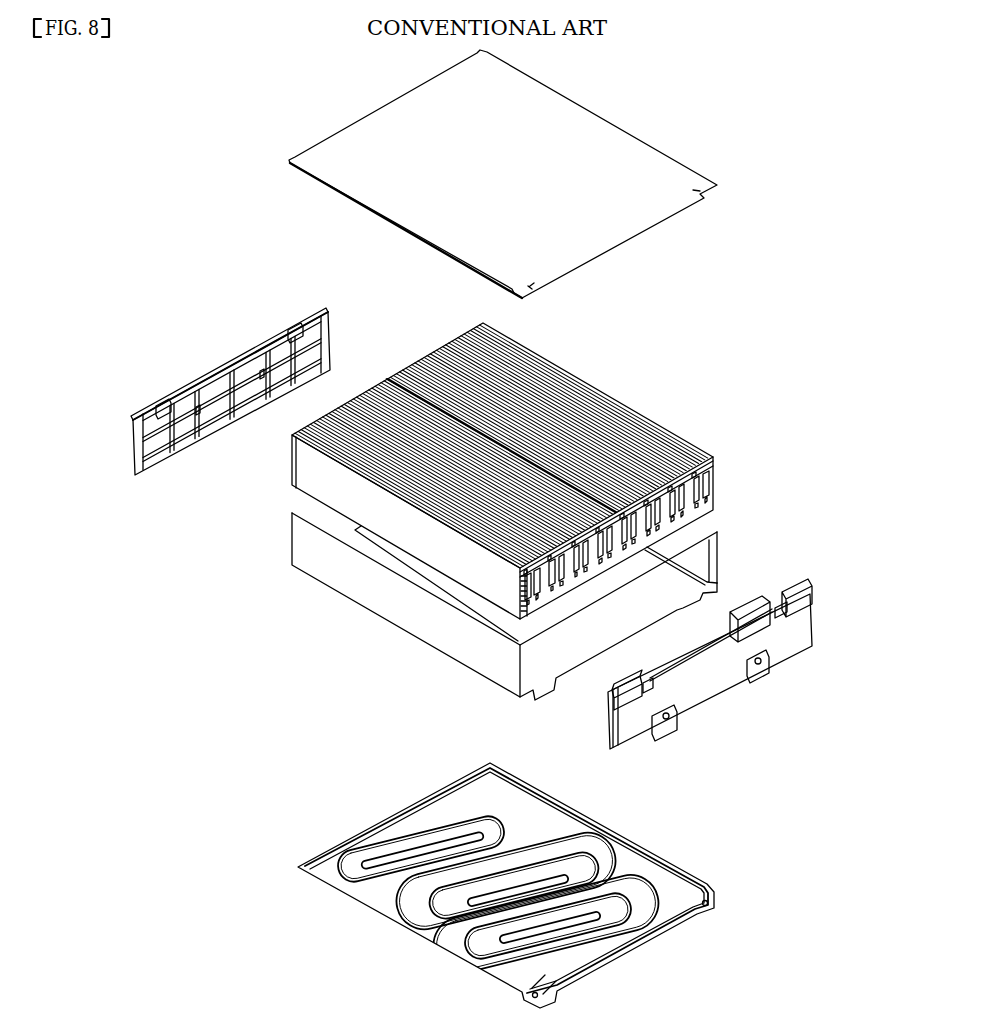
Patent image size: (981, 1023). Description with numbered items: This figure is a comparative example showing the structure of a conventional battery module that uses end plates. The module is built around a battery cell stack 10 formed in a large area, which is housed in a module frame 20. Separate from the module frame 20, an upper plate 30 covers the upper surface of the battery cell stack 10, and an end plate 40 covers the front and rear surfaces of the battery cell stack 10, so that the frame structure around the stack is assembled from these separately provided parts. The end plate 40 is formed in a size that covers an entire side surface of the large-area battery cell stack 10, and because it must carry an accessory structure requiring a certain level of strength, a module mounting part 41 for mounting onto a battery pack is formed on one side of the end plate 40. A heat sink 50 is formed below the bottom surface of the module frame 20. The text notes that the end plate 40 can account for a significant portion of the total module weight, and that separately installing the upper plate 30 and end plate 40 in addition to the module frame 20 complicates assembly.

The battery cell stack 10 is at (635, 407).
The module frame 20 is at (717, 534).
The upper plate 30 is at (625, 158).
The end plate 40 is at (235, 358).
The module mounting part 41 is at (672, 727).
The heat sink 50 is at (615, 948).